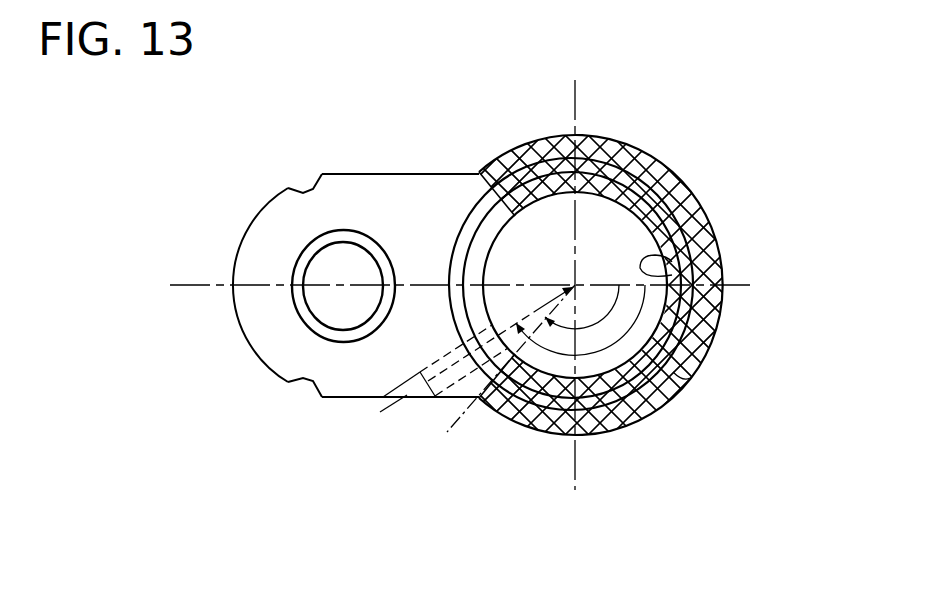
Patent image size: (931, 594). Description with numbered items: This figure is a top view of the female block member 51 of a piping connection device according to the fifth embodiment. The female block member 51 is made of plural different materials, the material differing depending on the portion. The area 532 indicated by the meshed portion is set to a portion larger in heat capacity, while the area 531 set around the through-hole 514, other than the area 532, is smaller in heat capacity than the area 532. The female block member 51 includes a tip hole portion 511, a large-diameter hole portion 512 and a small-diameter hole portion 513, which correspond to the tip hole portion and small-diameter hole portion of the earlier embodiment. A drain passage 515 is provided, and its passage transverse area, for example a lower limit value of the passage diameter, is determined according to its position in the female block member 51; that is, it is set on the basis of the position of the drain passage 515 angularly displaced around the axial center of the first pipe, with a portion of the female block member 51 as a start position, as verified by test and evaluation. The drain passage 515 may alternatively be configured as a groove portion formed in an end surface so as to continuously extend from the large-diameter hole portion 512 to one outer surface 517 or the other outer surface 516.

The female block member 51 is at (232, 244).
The tip hole portion 511 is at (622, 168).
The large-diameter hole portion 512 is at (688, 404).
The small-diameter hole portion 513 is at (672, 275).
The through-hole 514 is at (320, 310).
The drain passage 515 is at (407, 383).
The other outer surface 516 is at (361, 398).
The one outer surface 517 is at (690, 378).
The area 531 is at (368, 176).
The area 532 is at (680, 187).